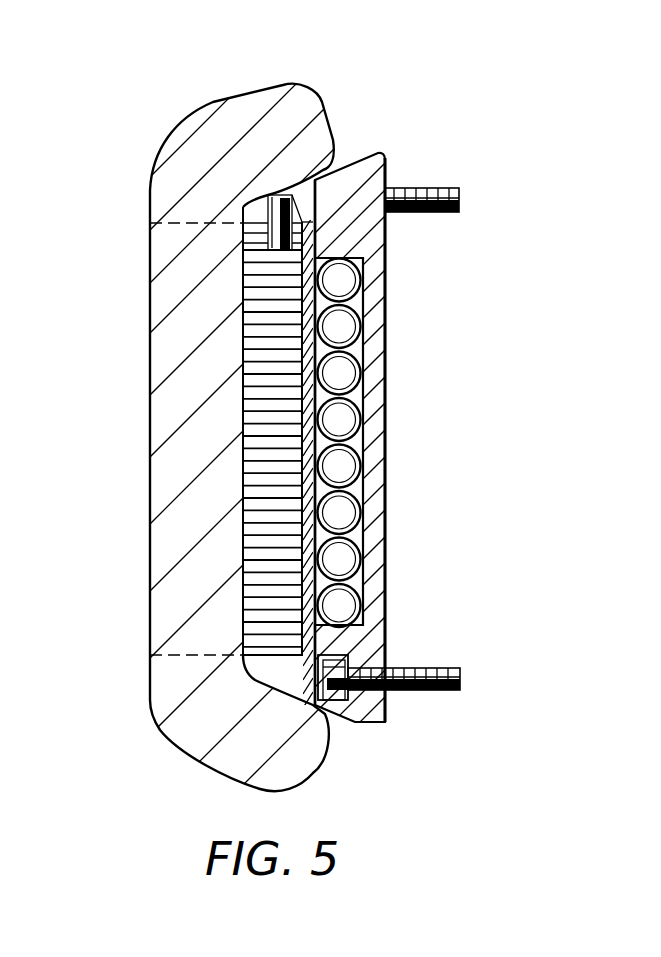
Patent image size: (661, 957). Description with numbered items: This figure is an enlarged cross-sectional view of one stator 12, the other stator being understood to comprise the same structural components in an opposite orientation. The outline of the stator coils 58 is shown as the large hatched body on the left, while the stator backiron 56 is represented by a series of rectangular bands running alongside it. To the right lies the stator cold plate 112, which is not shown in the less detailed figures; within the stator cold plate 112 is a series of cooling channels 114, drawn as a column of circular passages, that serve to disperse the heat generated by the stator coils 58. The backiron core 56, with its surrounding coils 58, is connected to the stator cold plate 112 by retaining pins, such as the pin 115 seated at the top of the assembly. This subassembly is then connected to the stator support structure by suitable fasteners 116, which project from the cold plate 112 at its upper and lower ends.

The stator 12 is at (211, 97).
The stator backiron 56 is at (262, 458).
The stator coils 58 is at (168, 350).
The stator cold plate 112 is at (374, 353).
The cooling channels 114 is at (342, 468).
The retaining pin 115 is at (266, 214).
The fasteners 116 is at (458, 188).